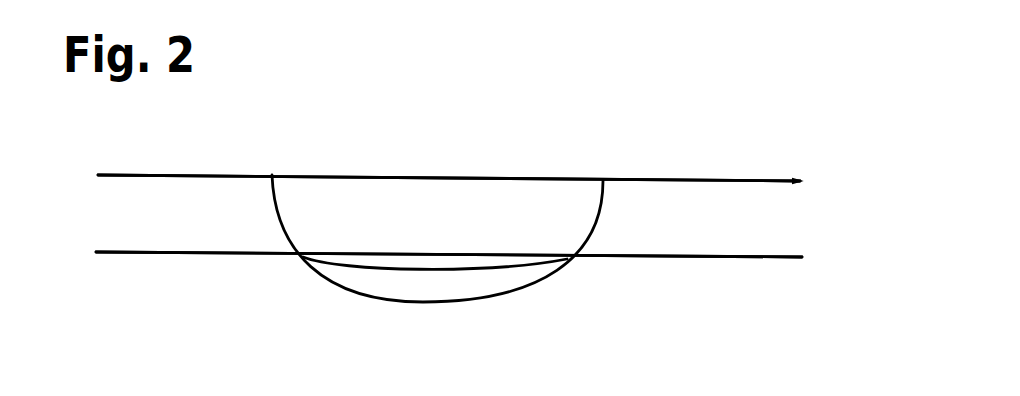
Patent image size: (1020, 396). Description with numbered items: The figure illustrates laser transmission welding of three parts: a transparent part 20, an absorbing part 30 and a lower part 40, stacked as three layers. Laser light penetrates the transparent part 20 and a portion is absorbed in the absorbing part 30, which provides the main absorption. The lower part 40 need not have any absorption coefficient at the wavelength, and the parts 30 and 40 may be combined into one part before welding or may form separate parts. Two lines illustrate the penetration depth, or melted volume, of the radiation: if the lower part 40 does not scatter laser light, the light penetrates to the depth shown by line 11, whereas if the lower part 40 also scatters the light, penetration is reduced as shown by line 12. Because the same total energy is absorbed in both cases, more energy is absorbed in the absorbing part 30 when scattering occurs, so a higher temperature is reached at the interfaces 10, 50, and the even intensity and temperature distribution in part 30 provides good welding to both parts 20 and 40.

The interface 10 is at (486, 177).
The transparent part 20 is at (449, 159).
The absorbing part 30 is at (449, 236).
The lower part 40 is at (135, 290).
The interface 50 is at (490, 263).
The line illustrating penetration depth 11 is at (453, 312).
The line illustrating reduced penetration depth 12 is at (520, 272).